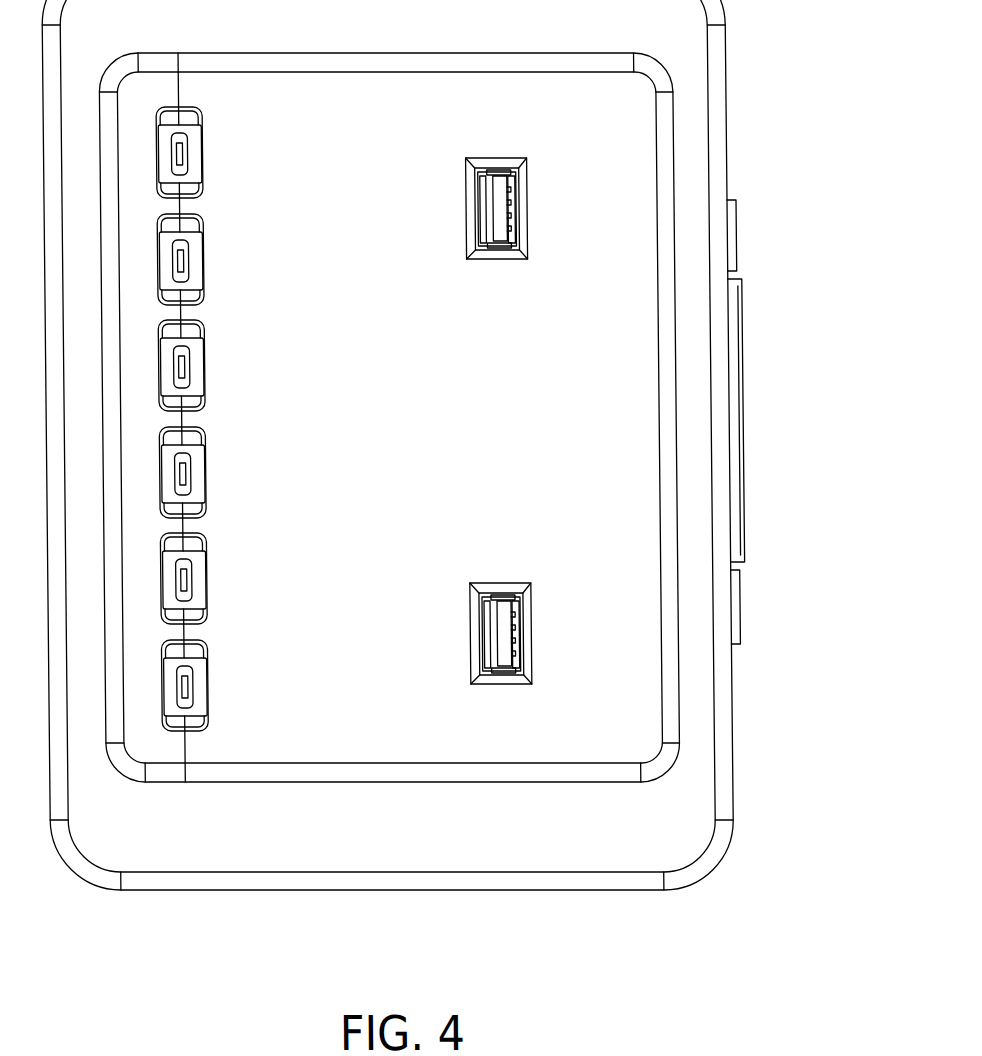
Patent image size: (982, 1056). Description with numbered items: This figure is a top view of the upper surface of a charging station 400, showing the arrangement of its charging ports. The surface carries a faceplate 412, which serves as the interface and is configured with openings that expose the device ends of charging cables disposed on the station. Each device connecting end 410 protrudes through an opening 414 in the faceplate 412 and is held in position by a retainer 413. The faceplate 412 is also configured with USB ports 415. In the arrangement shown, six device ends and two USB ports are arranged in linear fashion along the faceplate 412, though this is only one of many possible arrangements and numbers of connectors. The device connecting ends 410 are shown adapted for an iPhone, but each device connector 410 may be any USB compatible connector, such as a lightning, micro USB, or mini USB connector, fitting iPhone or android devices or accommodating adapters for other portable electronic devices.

The charging station 400 is at (677, 806).
The faceplate 412 is at (634, 122).
The device connecting end 410 is at (181, 152).
The retainer 413 is at (227, 170).
The opening 414 is at (393, 402).
The USB port 415 is at (501, 210).